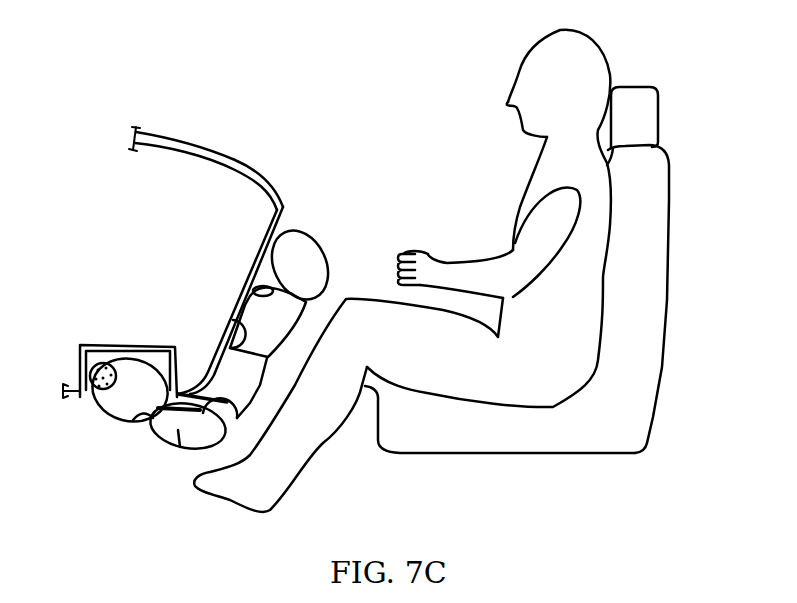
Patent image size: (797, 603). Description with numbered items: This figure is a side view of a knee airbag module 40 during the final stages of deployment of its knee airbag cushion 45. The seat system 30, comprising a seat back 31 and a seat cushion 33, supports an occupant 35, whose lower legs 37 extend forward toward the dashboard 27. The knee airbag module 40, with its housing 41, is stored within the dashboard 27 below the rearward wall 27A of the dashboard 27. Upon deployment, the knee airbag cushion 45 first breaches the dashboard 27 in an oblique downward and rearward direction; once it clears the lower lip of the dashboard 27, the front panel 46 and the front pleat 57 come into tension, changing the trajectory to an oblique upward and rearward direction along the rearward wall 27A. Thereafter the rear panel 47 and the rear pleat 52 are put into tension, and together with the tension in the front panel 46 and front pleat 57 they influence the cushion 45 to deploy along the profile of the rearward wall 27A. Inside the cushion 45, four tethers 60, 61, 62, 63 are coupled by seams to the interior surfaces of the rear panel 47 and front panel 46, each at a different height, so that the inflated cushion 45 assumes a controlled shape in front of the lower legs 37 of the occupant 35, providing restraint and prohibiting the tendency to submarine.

The dashboard 27 is at (225, 252).
The rearward wall of the dashboard 27A is at (270, 218).
The seat system 30 is at (555, 290).
The seat back 31 is at (652, 300).
The seat cushion 33 is at (467, 442).
The occupant 35 is at (540, 70).
The lower legs 37 is at (402, 271).
The knee airbag module 40 is at (136, 387).
The housing 41 is at (127, 345).
The knee airbag cushion 45 is at (313, 257).
The front panel 46 is at (193, 383).
The rear panel 47 is at (293, 327).
The rear pleat 52 is at (180, 447).
The front pleat 57 is at (187, 420).
The tether 60 is at (140, 417).
The tether 61 is at (204, 403).
The tether 62 is at (233, 323).
The tether 63 is at (242, 293).